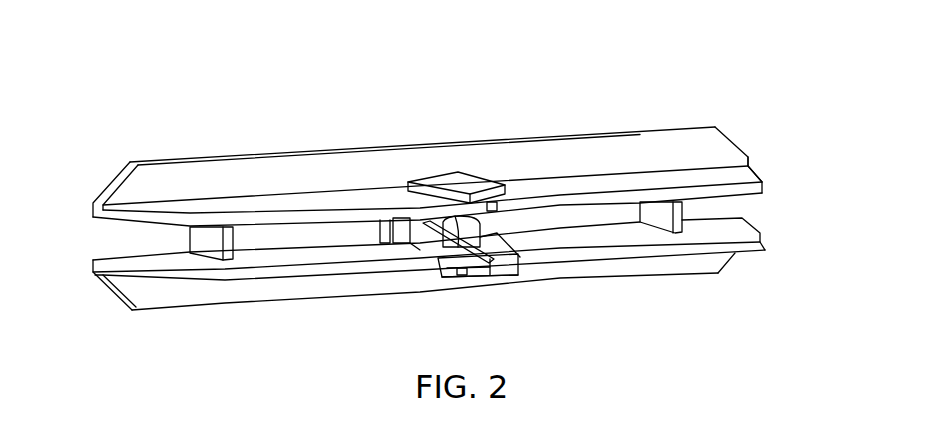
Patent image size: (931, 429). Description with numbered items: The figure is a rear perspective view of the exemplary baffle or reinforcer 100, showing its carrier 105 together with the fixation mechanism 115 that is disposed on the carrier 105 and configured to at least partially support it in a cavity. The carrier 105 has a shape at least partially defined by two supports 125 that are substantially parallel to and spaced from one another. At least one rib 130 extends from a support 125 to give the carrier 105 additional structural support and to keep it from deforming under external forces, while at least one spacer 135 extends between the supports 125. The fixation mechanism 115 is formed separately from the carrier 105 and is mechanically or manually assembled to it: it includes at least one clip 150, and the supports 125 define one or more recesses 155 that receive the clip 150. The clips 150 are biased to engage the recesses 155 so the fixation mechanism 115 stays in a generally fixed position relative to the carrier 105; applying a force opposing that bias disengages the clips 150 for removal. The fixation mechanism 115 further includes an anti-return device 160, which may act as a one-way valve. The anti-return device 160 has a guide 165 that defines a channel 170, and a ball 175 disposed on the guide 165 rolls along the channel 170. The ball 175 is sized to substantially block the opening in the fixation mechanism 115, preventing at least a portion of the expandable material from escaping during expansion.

The baffle or reinforcer 100 is at (602, 92).
The carrier 105 is at (765, 186).
The fixation mechanism 115 is at (486, 284).
The supports 125 is at (297, 203).
The rib 130 is at (520, 137).
The spacer 135 is at (203, 239).
The clip 150 is at (519, 247).
The recess 155 is at (503, 202).
The anti-return device 160 is at (411, 254).
The guide 165 is at (449, 254).
The channel 170 is at (492, 245).
The ball 175 is at (462, 264).